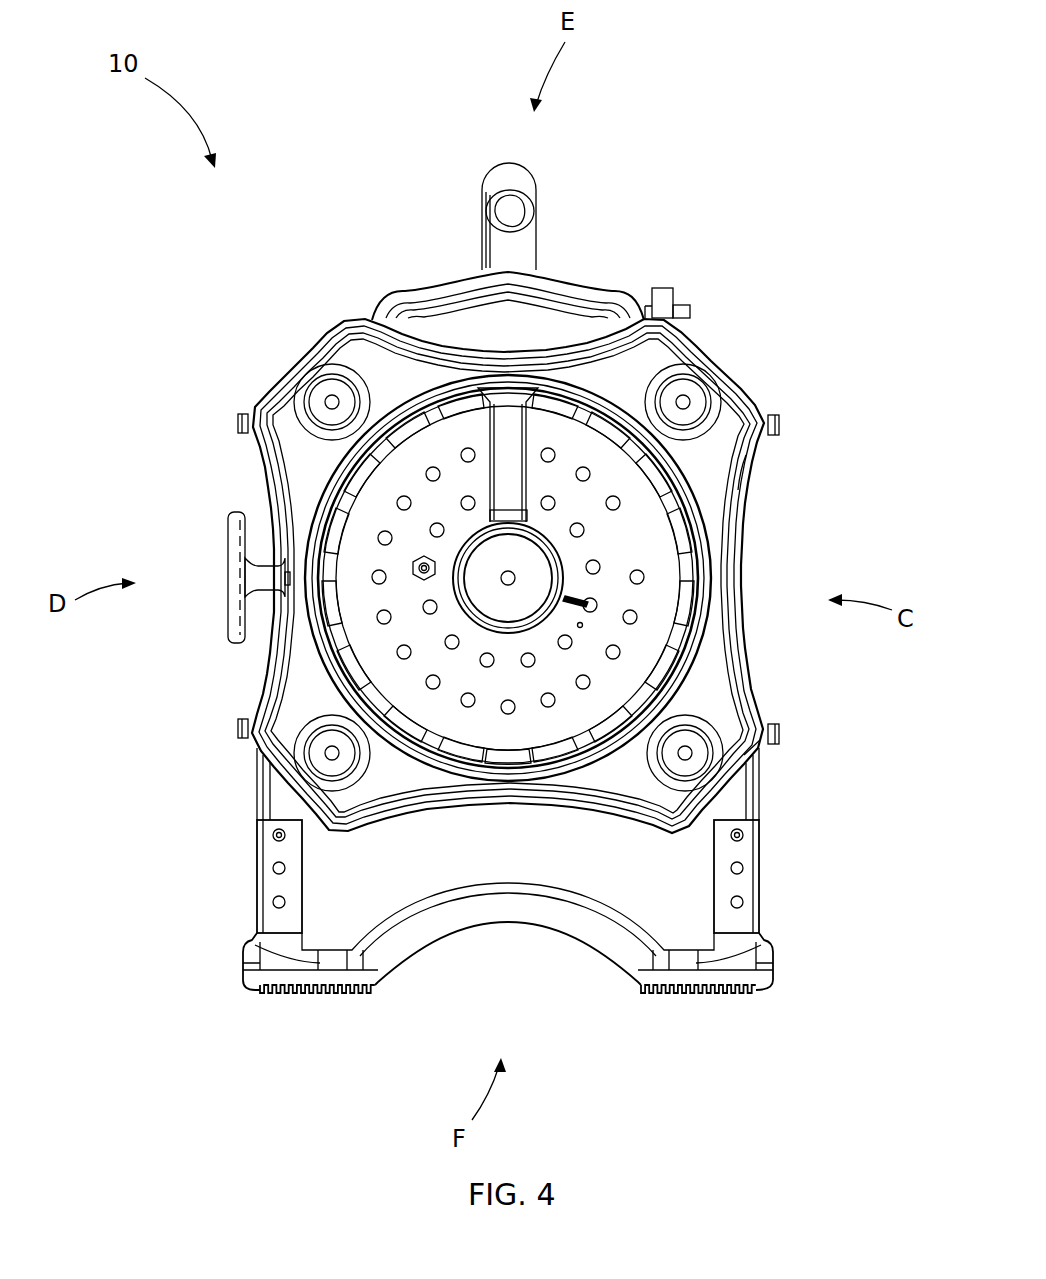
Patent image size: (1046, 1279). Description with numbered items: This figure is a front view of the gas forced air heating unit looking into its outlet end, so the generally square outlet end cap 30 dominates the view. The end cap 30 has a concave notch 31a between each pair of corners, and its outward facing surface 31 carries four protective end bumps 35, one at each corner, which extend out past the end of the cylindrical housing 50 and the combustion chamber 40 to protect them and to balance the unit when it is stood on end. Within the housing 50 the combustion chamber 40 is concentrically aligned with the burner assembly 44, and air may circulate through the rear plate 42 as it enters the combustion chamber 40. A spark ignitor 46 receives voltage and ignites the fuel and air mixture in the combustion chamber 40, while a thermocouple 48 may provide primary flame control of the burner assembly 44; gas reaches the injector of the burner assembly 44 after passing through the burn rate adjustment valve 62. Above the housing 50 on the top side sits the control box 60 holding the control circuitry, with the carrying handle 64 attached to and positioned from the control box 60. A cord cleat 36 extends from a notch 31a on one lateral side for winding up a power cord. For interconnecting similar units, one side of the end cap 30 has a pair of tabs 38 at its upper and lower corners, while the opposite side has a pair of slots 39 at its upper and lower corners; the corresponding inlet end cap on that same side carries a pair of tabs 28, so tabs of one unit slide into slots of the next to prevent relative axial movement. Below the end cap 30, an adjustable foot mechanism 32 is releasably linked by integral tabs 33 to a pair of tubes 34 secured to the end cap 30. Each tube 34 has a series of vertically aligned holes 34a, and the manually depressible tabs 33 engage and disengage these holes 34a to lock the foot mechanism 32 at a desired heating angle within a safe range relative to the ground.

The tabs 28 is at (780, 425).
The outlet end cap 30 is at (766, 362).
The outward facing surface 31 is at (717, 705).
The concave notch 31a is at (474, 348).
The adjustable foot mechanism 32 is at (395, 953).
The integral tabs 33 is at (273, 838).
The tubes 34 is at (272, 888).
The holes 34a is at (286, 902).
The end bumps 35 is at (318, 398).
The cord cleat 36 is at (232, 598).
The tabs 38 is at (240, 422).
The slots 39 is at (745, 460).
The combustion chamber 40 is at (325, 522).
The rear plate 42 is at (672, 573).
The burner assembly 44 is at (540, 578).
The spark ignitor 46 is at (413, 563).
The thermocouple 48 is at (600, 604).
The housing 50 is at (488, 390).
The control box 60 is at (410, 298).
The burn rate adjustment valve 62 is at (668, 300).
The handle 64 is at (520, 183).